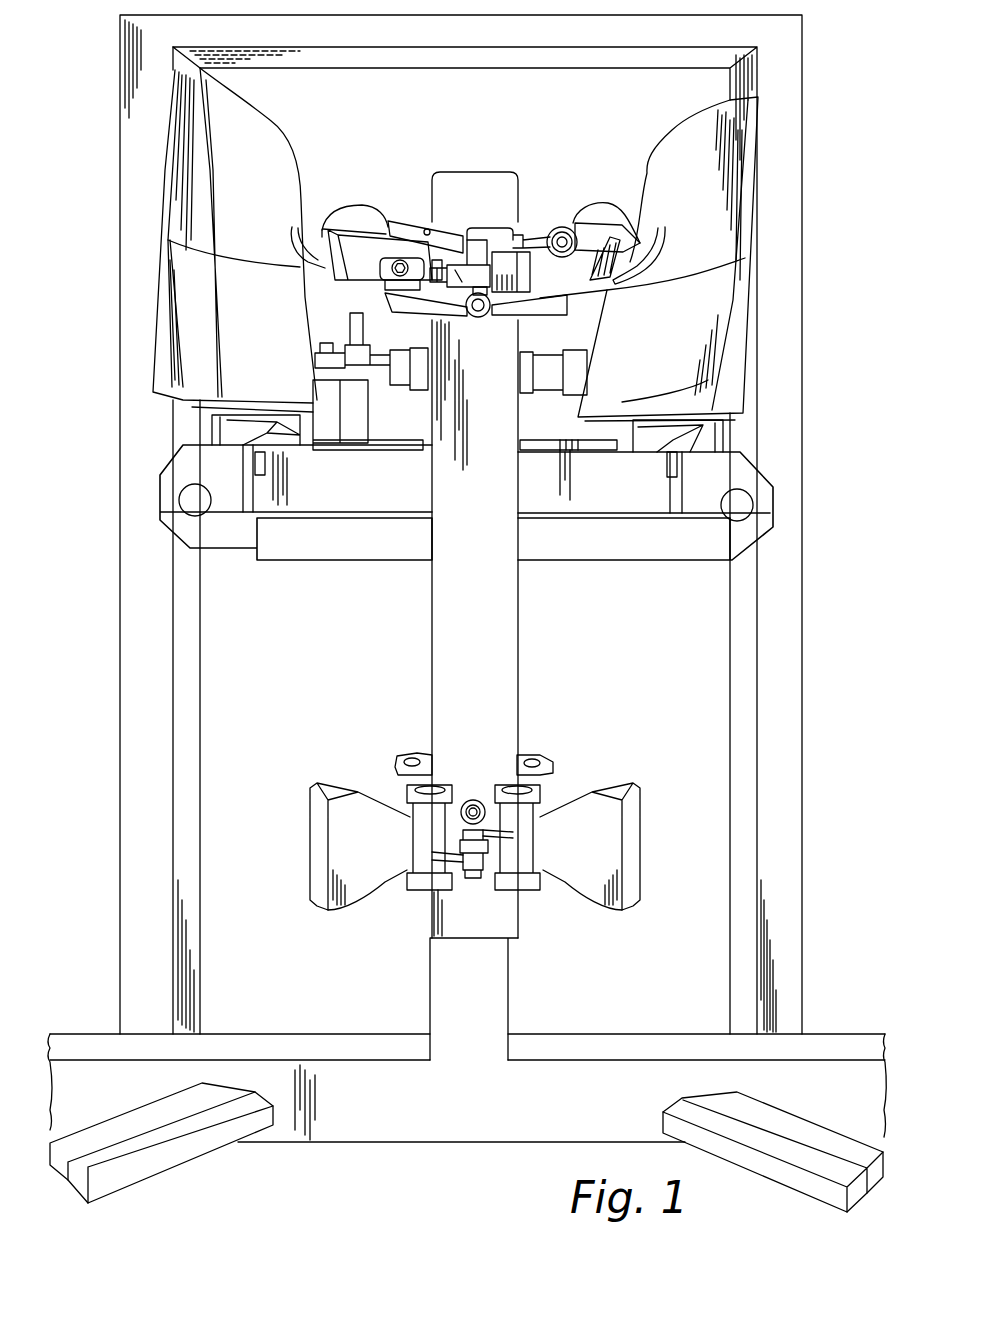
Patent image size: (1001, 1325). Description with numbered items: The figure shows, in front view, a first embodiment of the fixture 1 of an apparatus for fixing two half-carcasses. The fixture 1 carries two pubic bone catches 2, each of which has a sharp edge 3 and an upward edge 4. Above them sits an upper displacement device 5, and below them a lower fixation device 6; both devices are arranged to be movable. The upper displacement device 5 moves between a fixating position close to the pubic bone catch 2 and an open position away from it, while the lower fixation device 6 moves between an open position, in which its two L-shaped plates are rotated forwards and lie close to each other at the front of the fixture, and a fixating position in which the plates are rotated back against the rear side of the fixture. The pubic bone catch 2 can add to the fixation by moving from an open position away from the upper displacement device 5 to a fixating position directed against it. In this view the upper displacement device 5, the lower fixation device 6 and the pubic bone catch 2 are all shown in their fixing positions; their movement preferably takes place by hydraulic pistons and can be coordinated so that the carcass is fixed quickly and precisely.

The fixture 1 is at (533, 690).
The pubic bone catch 2 is at (348, 198).
The sharp edge 3 is at (366, 197).
The upward edge 4 is at (308, 232).
The upper displacement device 5 is at (227, 190).
The lower fixation device 6 is at (360, 887).